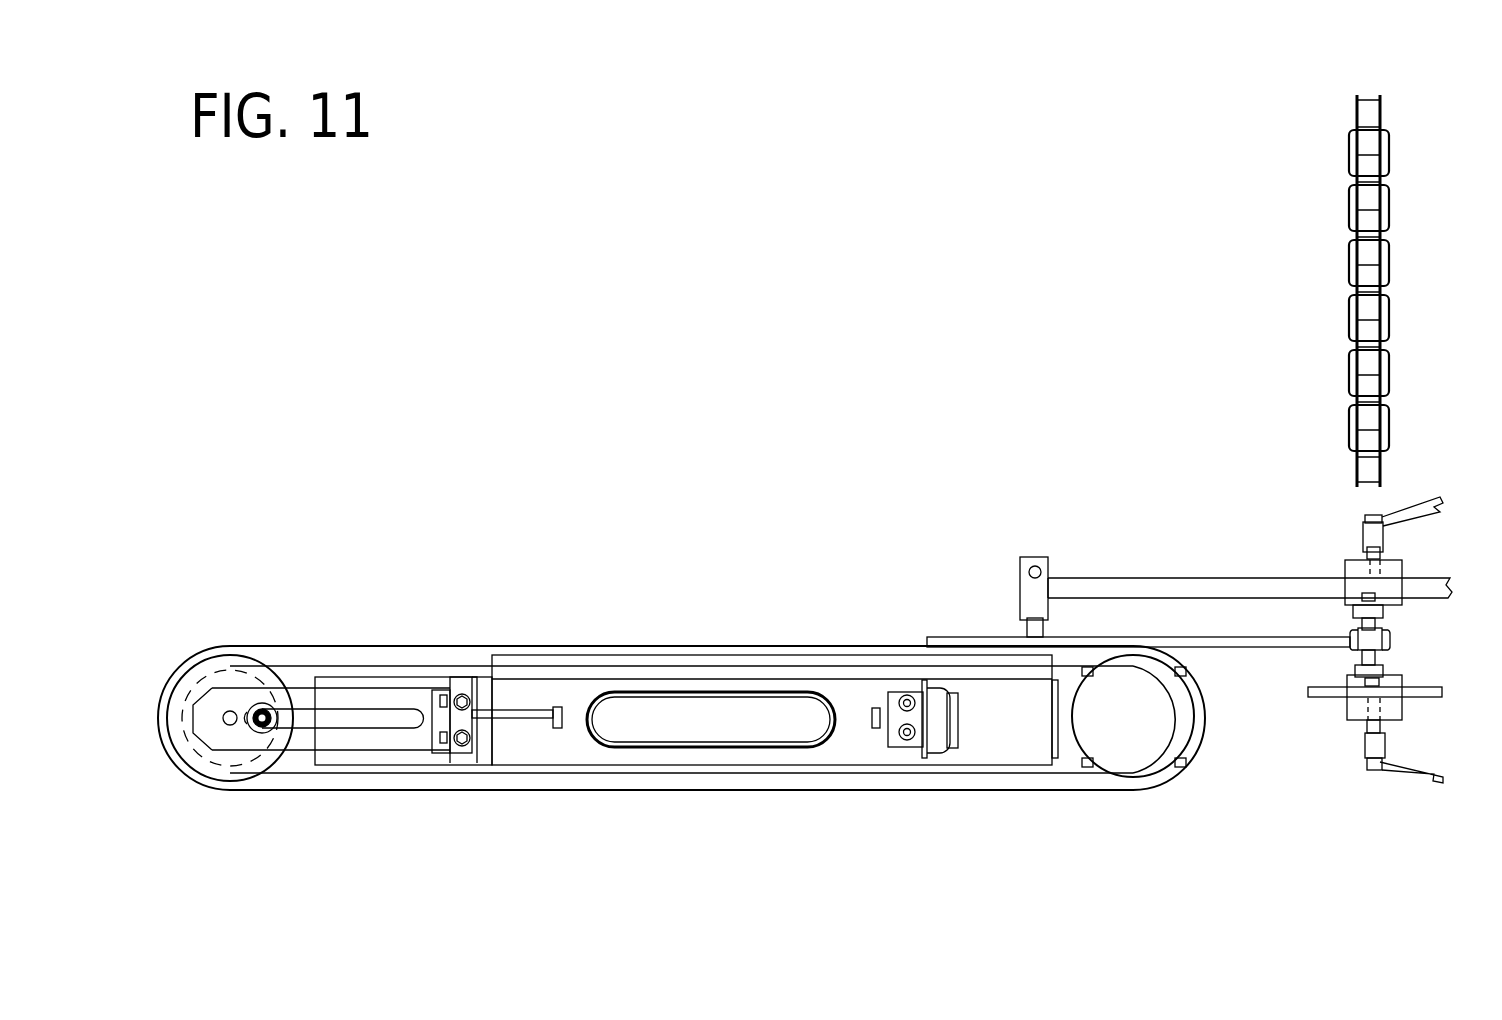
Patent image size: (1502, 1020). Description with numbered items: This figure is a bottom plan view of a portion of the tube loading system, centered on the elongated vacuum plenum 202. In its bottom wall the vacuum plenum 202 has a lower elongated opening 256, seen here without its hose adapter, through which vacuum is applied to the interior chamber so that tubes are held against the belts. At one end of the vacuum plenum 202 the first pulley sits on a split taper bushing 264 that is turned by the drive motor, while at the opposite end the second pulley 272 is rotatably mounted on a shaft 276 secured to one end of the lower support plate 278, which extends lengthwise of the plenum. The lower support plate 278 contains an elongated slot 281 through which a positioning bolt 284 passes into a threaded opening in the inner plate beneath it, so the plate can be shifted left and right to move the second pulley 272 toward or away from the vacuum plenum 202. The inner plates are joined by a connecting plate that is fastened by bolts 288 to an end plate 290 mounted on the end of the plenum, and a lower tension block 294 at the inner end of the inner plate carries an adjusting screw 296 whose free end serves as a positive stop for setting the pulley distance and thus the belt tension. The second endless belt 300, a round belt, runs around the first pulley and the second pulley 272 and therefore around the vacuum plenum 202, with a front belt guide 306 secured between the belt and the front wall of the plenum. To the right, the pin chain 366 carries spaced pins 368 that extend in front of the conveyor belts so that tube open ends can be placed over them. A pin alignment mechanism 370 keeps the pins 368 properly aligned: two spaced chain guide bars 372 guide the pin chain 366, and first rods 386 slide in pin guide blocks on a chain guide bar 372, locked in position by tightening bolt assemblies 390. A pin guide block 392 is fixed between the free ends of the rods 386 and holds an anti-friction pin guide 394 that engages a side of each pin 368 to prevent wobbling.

The vacuum plenum 202 is at (525, 748).
The lower elongated opening 256 is at (782, 742).
The split taper bushing 264 is at (1138, 752).
The second pulley 272 is at (196, 762).
The shaft 276 is at (214, 716).
The lower support plate 278 is at (298, 685).
The elongated slot 281 is at (325, 738).
The positioning bolt 284 is at (333, 712).
The bolt 288 is at (438, 703).
The end plate 290 is at (480, 752).
The lower tension block 294 is at (548, 708).
The adjusting screw 296 is at (476, 712).
The second endless belt 300 is at (873, 780).
The front belt guide 306 is at (728, 665).
The pin chain 366 is at (1348, 367).
The pin 368 is at (1225, 650).
The pin alignment mechanism 370 is at (1425, 567).
The chain guide bar 372 is at (1345, 605).
The first rod 386 is at (1107, 580).
The tightening bolt assembly 390 is at (1400, 503).
The pin guide block 392 is at (1025, 593).
The anti-friction pin guide 394 is at (1035, 630).